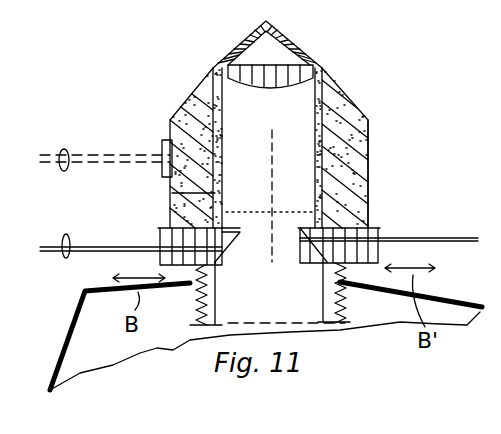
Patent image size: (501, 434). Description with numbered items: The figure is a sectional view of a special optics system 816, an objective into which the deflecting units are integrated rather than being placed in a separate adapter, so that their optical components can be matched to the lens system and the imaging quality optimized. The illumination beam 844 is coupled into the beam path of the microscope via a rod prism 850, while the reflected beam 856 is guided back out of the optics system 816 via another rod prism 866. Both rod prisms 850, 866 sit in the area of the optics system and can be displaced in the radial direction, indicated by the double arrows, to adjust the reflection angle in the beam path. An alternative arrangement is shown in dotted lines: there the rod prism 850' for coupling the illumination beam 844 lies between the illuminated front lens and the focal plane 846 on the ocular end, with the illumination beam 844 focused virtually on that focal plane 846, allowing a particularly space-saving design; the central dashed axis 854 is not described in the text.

The optics system 816 is at (187, 103).
The central bore 854 is at (272, 121).
The rod prism 850' is at (142, 136).
The illumination beam 844 is at (172, 193).
The rod prism 850 is at (131, 226).
The focal plane 846 is at (367, 173).
The rod prism 866 is at (378, 229).
The reflected beam 856 is at (433, 233).